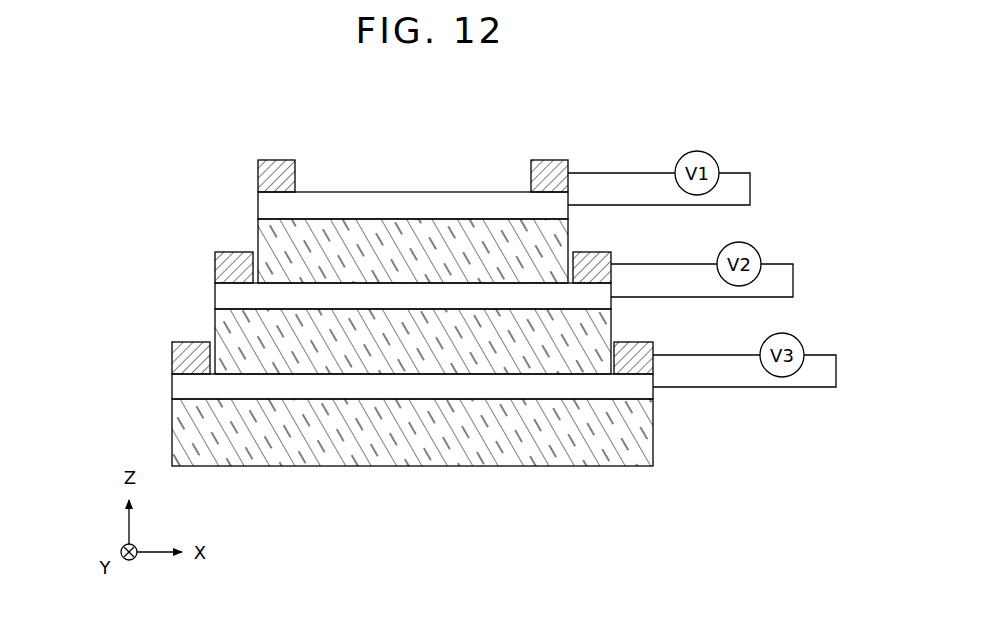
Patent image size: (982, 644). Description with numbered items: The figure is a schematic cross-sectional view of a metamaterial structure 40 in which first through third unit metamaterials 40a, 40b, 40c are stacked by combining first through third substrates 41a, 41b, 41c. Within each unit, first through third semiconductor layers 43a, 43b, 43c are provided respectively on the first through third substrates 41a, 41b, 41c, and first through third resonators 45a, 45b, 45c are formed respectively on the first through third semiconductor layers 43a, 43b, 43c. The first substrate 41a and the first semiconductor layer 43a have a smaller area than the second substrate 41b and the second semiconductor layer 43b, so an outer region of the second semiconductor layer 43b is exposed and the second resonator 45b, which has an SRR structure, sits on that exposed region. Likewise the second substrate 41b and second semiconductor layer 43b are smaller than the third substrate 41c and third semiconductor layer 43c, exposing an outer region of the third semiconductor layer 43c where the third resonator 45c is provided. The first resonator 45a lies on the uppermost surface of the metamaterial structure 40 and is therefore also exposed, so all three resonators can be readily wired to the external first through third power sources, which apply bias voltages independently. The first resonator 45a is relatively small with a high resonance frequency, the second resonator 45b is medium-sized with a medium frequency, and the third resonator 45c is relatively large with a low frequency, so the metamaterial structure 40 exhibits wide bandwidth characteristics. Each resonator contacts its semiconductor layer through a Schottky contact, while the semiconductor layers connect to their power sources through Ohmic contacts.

The metamaterial structure 40 is at (170, 134).
The first unit metamaterial 40a is at (178, 157).
The second unit metamaterial 40b is at (134, 250).
The third unit metamaterial 40c is at (91, 340).
The first resonator 45a is at (258, 165).
The first semiconductor layer 43a is at (263, 206).
The first substrate 41a is at (263, 237).
The second resonator 45b is at (215, 257).
The second semiconductor layer 43b is at (220, 298).
The second substrate 41b is at (220, 329).
The third resonator 45c is at (172, 347).
The third semiconductor layer 43c is at (178, 388).
The third substrate 41c is at (178, 419).